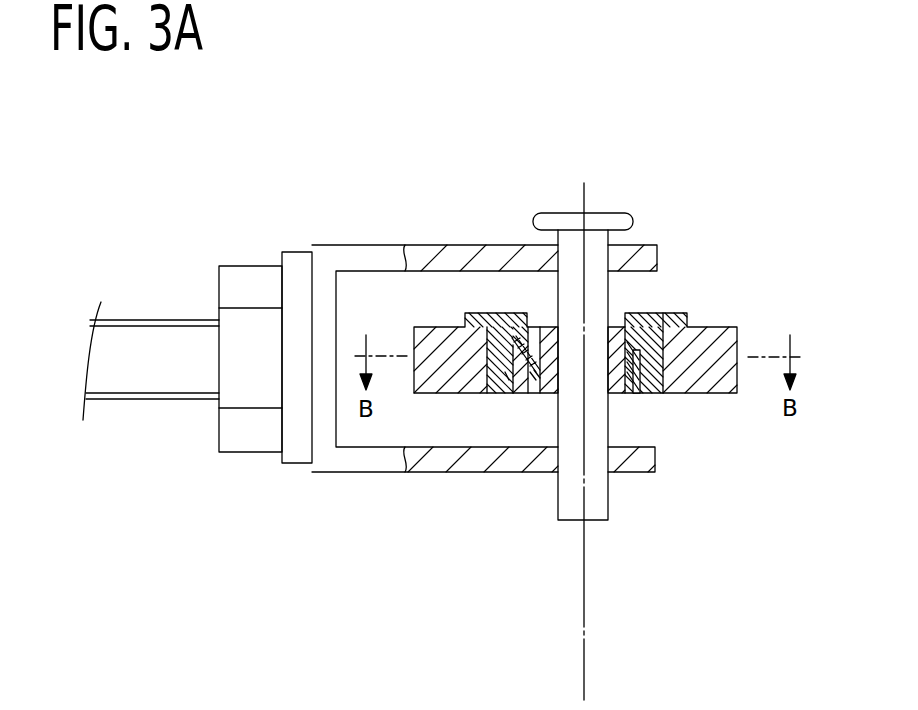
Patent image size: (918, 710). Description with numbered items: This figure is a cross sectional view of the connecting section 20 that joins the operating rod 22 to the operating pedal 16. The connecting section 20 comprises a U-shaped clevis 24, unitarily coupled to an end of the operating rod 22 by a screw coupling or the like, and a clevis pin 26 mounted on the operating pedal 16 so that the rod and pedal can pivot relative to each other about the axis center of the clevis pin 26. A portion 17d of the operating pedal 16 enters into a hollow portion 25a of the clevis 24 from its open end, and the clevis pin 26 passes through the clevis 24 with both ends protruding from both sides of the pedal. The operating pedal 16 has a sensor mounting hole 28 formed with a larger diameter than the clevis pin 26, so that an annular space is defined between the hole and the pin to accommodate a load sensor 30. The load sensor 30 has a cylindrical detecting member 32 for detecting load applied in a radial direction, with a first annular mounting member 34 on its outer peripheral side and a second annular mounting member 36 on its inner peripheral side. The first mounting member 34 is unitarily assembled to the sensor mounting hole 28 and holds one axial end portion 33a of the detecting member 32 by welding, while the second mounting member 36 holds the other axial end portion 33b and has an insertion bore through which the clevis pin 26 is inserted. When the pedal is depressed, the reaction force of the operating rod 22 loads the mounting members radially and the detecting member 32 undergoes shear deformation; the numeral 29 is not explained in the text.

The operating pedal 16 is at (741, 311).
The portion of the operating pedal 17d is at (722, 368).
The connecting section 20 is at (348, 493).
The operating rod 22 is at (133, 382).
The U-shaped clevis 24 is at (350, 258).
The hollow portion 25a is at (442, 422).
The clevis pin 26 is at (597, 238).
The sensor mounting hole 28 is at (652, 390).
The hole 29 is at (508, 372).
The load sensor 30 is at (678, 280).
The detecting member 32 is at (515, 385).
The one axial end portion of the detecting member 33a is at (512, 340).
The other axial end portion of the detecting member 33b is at (537, 372).
The first annular mounting member 34 is at (503, 318).
The second annular mounting member 36 is at (622, 385).